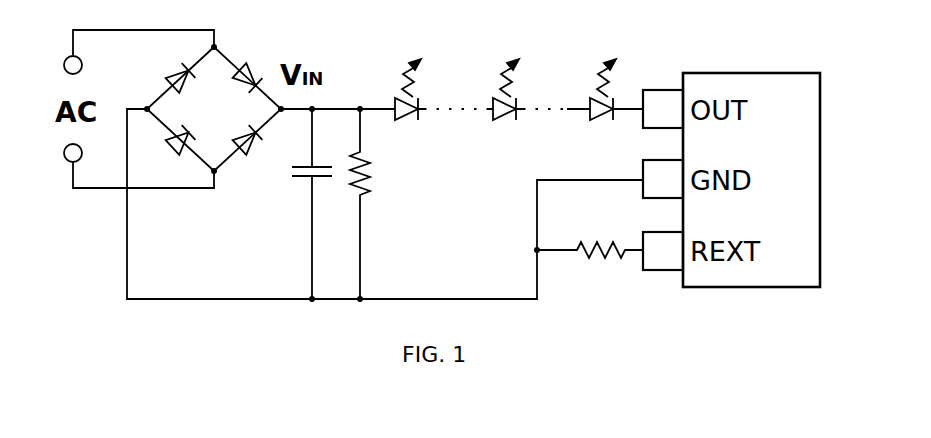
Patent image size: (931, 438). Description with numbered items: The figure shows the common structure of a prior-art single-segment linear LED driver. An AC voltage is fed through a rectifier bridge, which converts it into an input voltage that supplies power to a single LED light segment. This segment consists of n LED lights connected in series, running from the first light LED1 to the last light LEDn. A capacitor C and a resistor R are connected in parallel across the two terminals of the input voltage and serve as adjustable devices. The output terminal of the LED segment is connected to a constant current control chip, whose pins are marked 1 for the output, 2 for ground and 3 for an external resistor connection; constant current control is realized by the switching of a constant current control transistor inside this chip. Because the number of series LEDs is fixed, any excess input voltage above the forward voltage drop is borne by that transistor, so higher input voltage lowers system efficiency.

The OUT pin 1 is at (663, 109).
The GND pin 2 is at (663, 179).
The REXT pin 3 is at (663, 251).
The capacitor C is at (300, 204).
The resistor R is at (368, 204).
The LED light LED1 is at (406, 107).
The LED light LEDn is at (604, 107).